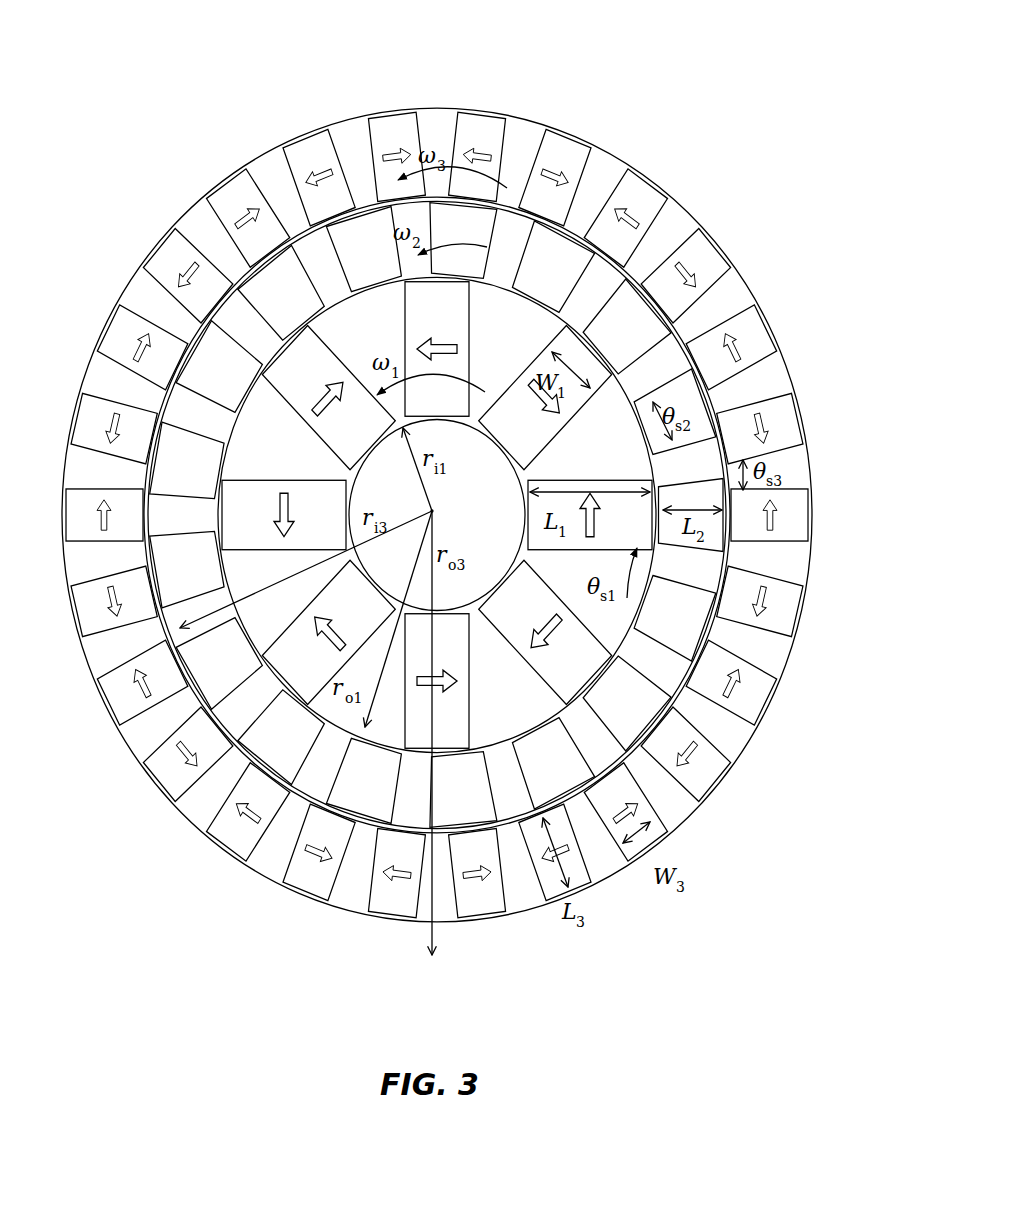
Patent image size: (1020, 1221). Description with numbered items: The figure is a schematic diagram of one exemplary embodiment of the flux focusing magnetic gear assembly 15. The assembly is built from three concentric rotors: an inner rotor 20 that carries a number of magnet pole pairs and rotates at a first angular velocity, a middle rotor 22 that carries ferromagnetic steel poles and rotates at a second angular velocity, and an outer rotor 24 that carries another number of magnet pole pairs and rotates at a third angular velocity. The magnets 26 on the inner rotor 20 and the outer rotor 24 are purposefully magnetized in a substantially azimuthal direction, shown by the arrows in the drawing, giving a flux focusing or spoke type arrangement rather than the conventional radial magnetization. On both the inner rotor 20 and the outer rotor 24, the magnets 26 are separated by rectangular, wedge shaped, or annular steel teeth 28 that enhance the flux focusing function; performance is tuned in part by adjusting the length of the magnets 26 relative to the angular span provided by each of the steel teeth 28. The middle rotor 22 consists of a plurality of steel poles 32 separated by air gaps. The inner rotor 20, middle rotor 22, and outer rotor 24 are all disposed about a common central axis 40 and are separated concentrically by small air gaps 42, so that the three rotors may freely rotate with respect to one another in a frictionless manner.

The flux focusing magnetic gear assembly 15 is at (641, 78).
The inner rotor 20 is at (280, 445).
The middle rotor 22 is at (242, 327).
The outer rotor 24 is at (242, 208).
The magnets 26 is at (311, 892).
The steel teeth 28 is at (273, 882).
The steel poles 32 is at (216, 480).
The common central axis 40 is at (460, 521).
The air gaps 42 is at (152, 592).